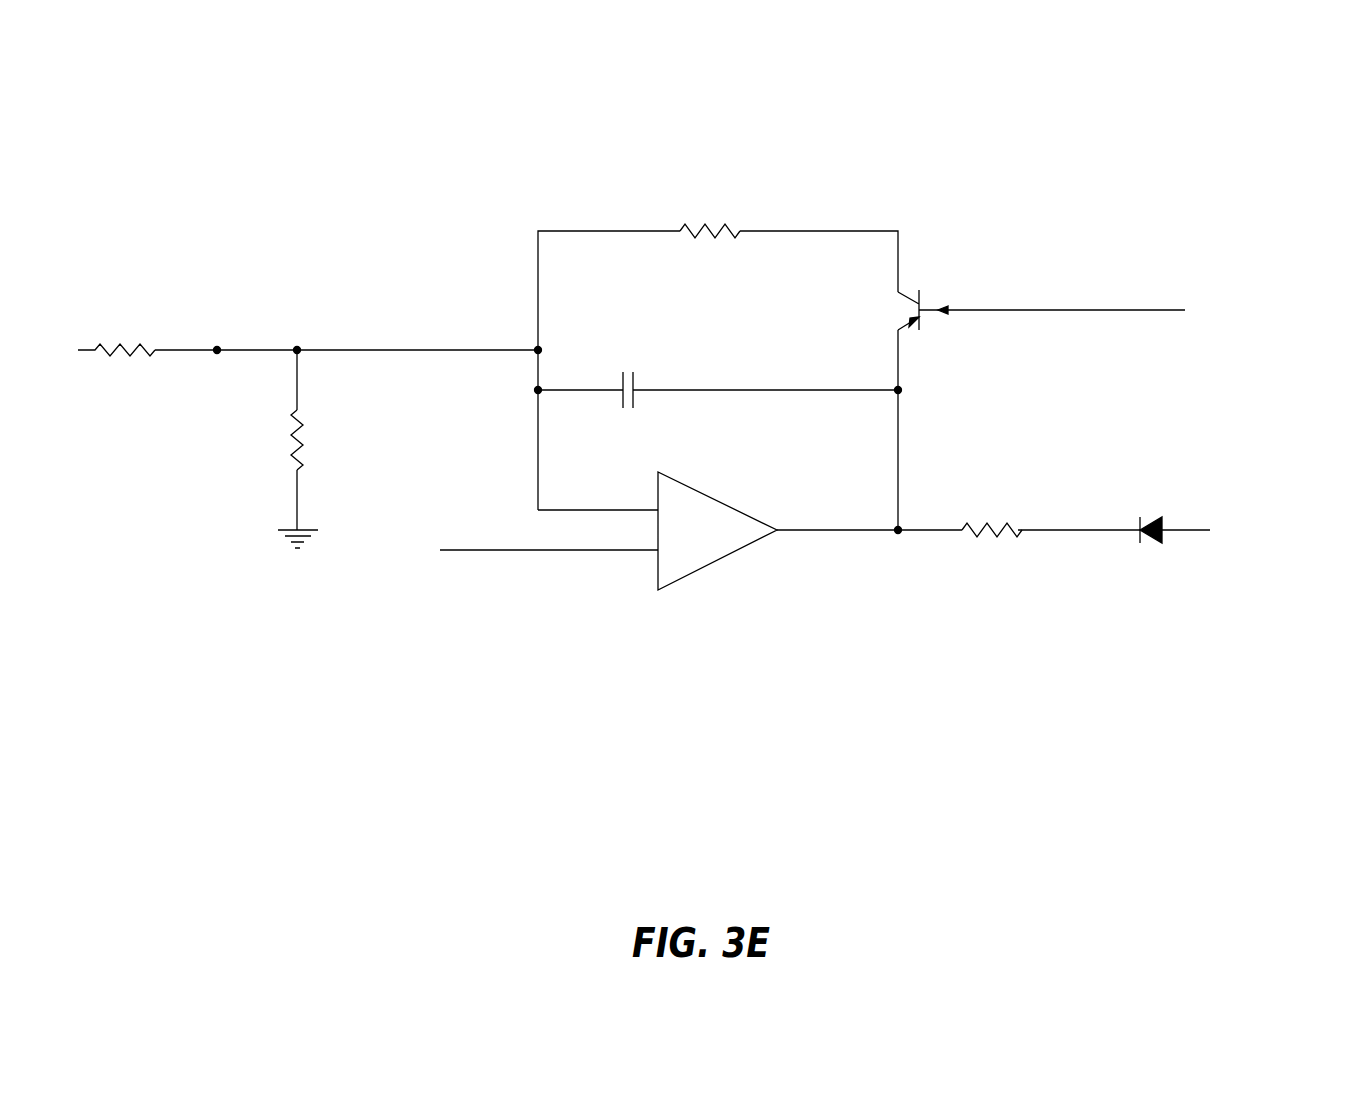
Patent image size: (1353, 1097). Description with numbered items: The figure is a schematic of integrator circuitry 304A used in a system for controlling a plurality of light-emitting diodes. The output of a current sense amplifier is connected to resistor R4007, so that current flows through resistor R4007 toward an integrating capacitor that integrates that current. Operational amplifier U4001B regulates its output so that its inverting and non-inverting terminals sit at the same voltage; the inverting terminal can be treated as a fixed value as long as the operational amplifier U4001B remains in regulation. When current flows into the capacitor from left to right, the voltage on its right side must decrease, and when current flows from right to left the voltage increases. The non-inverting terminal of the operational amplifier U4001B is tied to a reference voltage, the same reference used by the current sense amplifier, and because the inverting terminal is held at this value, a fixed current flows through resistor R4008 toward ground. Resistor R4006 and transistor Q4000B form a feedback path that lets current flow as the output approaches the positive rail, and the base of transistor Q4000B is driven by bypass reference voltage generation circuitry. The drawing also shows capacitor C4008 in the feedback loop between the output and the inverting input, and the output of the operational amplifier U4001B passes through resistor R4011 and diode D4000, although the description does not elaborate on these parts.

The integrator circuitry 304A is at (1228, 149).
The resistor R4007 is at (116, 353).
The resistor R4008 is at (327, 440).
The resistor R4006 is at (700, 224).
The feedback capacitor C4008 is at (622, 407).
The transistor Q4000B is at (886, 313).
The operational amplifier U4001B is at (732, 541).
The output resistor R4011 is at (981, 529).
The diode D4000 is at (1148, 517).